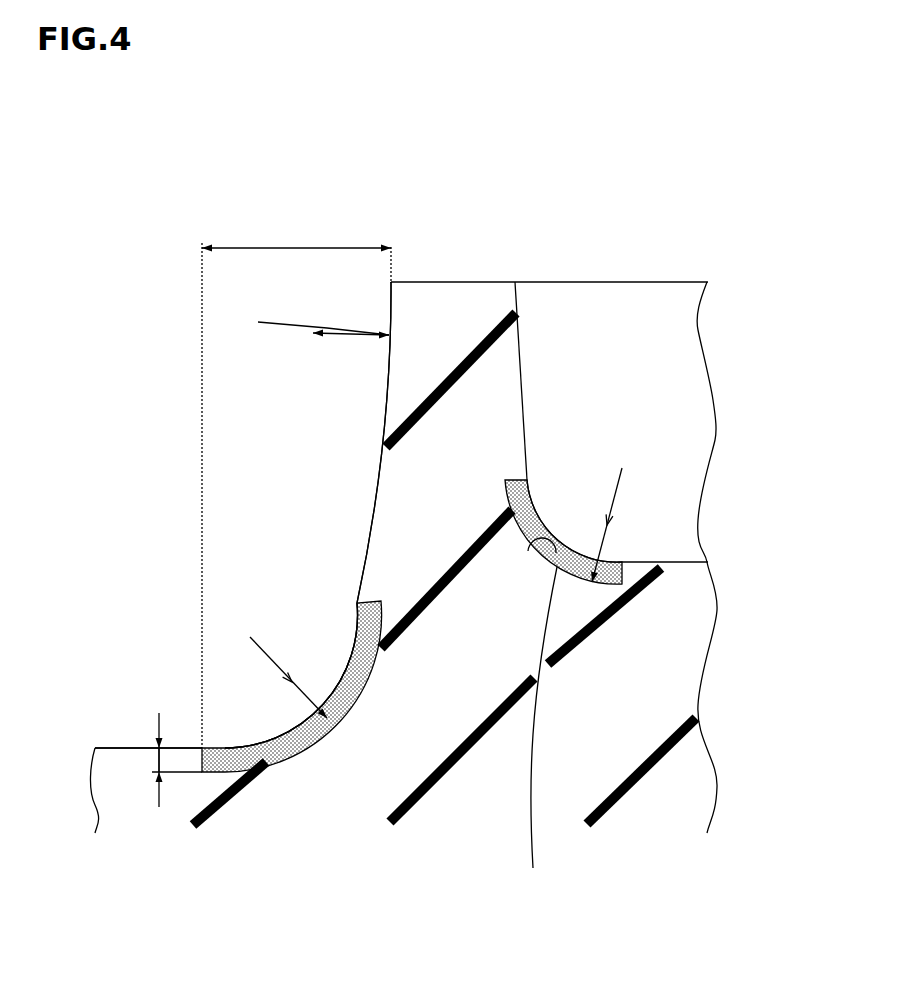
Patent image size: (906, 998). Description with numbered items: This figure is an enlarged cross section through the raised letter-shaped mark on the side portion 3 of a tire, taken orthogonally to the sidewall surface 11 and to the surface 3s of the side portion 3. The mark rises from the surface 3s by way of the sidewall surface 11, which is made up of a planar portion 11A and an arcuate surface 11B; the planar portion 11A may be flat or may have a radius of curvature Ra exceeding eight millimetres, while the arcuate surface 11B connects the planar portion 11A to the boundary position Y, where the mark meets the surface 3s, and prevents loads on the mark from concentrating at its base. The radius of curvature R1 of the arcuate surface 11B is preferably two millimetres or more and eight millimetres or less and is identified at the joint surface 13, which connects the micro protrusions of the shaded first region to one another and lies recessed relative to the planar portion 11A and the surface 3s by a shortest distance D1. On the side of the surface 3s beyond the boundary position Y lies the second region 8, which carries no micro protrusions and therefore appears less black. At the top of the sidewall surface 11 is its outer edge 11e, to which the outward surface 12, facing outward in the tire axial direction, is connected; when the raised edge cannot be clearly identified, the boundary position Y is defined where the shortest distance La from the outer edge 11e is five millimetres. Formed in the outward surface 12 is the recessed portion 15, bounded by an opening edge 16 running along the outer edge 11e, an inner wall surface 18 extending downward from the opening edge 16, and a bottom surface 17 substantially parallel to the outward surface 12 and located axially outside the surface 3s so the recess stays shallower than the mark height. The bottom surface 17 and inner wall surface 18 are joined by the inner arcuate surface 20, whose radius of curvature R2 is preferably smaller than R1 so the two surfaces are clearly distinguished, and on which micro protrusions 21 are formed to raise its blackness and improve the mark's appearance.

The side portion 3 is at (103, 630).
The surface of the side portion 3s is at (112, 733).
The second region 8 is at (135, 747).
The sidewall surface 11 is at (248, 437).
The planar portion 11A is at (382, 417).
The arcuate surface 11B is at (336, 650).
The outer edge 11e is at (393, 280).
The outward surface 12 is at (453, 282).
The joint surface 13 is at (282, 757).
The recessed portion 15 is at (673, 422).
The opening edge 16 is at (515, 283).
The bottom surface 17 is at (678, 562).
The inner wall surface 18 is at (518, 340).
The inner arcuate surface 20 is at (537, 735).
The micro protrusions 21 is at (530, 497).
The shortest distance La is at (296, 484).
The radius of curvature Ra is at (303, 323).
The radius of curvature of the arcuate surface R1 is at (280, 665).
The radius of curvature of the inner arcuate surface R2 is at (611, 513).
The boundary position Y is at (198, 743).
The shortest distance between the joint surface and the surface D1 is at (155, 762).